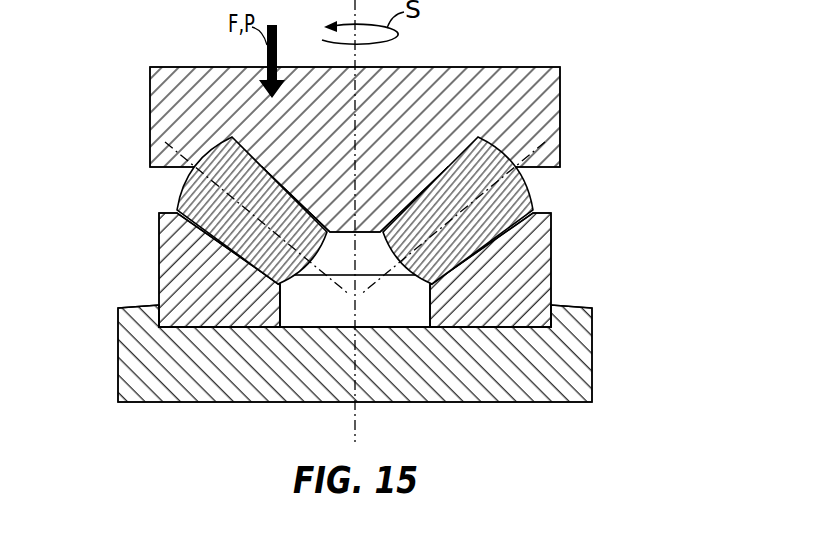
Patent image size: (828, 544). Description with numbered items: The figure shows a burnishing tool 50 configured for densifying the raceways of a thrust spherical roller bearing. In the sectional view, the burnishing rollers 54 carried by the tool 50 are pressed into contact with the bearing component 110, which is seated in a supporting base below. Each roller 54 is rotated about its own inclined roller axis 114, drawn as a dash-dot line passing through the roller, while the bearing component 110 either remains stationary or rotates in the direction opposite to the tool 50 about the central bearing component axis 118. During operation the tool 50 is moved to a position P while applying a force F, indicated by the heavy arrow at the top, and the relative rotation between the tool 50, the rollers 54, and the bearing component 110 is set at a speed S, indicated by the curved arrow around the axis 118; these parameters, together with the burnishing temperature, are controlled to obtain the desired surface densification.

The burnishing tool 50 is at (585, 47).
The burnishing rollers 54 is at (183, 193).
The bearing component 110 is at (172, 263).
The roller axis 114 is at (152, 153).
The bearing component axis 118 is at (357, 414).